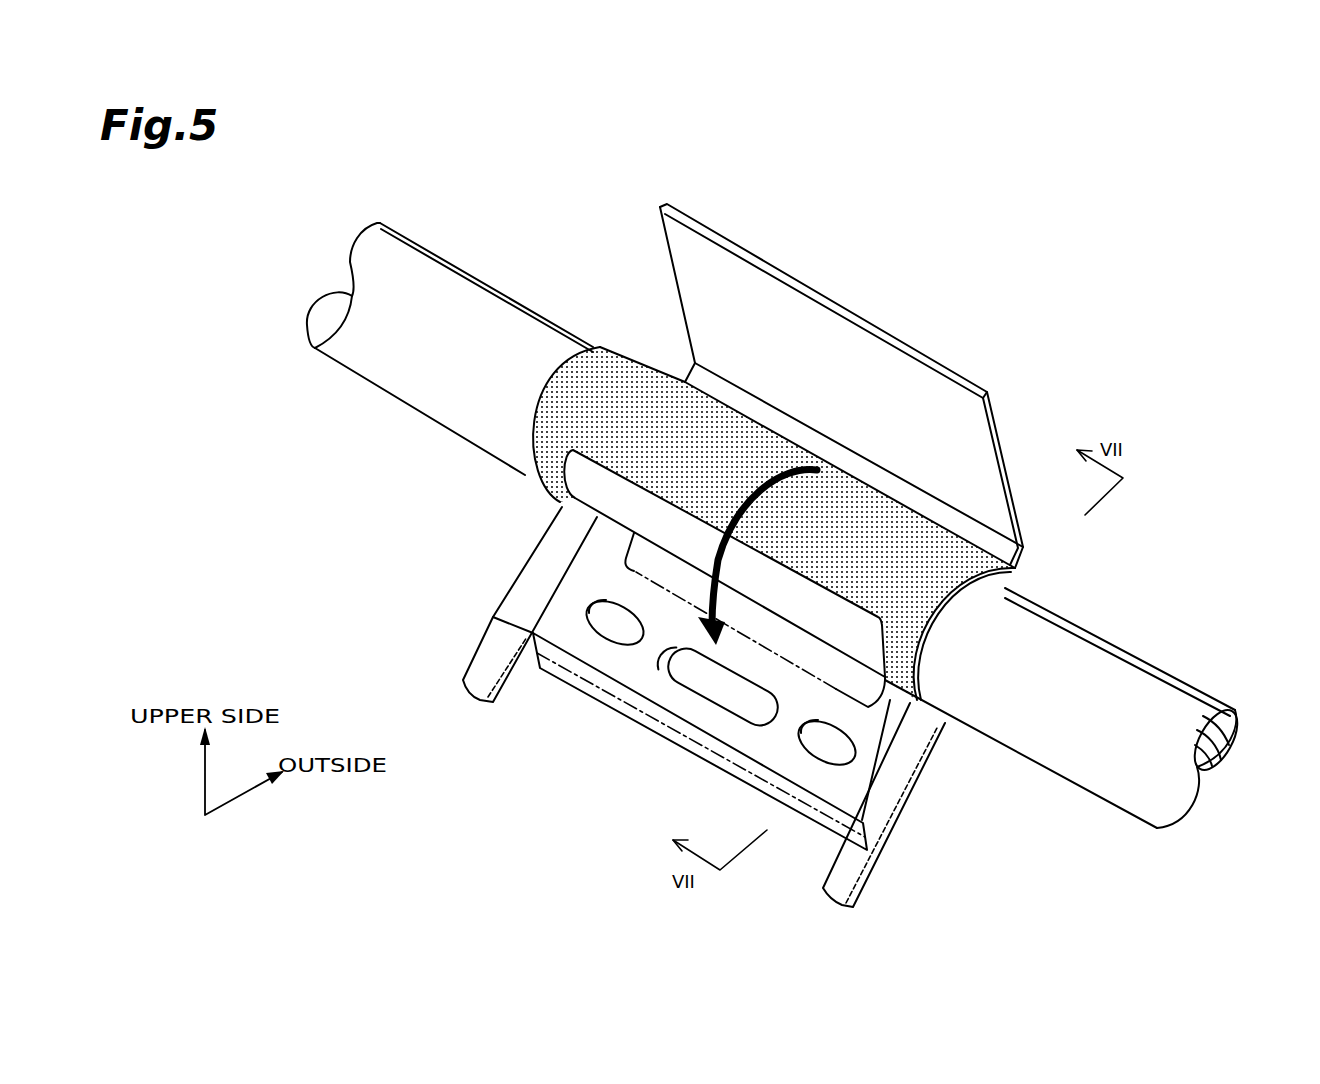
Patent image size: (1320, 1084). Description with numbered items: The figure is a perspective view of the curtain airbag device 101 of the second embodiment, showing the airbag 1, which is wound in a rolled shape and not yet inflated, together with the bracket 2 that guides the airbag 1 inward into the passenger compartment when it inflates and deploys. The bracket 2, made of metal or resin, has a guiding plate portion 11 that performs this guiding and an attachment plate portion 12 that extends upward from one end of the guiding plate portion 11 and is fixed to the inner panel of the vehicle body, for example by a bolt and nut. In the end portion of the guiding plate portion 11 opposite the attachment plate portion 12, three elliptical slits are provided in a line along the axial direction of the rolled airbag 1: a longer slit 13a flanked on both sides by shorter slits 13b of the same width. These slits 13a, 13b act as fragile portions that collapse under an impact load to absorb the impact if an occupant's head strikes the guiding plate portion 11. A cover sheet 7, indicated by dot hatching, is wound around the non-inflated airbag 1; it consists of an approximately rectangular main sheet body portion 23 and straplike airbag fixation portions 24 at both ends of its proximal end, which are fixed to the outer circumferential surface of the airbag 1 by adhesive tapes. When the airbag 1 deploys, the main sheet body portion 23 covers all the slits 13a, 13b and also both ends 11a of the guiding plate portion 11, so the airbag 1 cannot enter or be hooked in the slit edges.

The airbag 1 is at (1155, 660).
The bracket 2 is at (920, 340).
The cover sheet 7 is at (917, 510).
The guiding plate portion 11 is at (587, 580).
The both ends of the guiding plate portion 11a is at (583, 547).
The attachment plate portion 12 is at (690, 262).
The slit 13a is at (713, 663).
The slits 13b is at (607, 603).
The main sheet body portion 23 is at (698, 437).
The airbag fixation portion 24 is at (560, 508).
The curtain airbag device 101 is at (1173, 228).